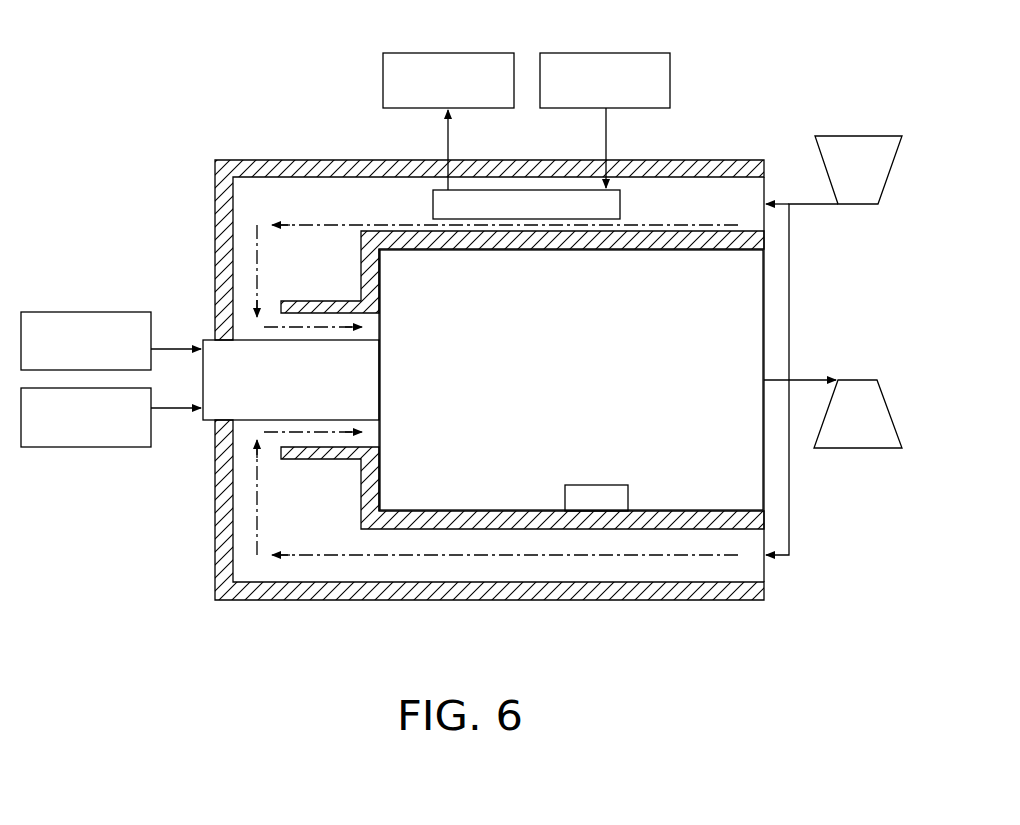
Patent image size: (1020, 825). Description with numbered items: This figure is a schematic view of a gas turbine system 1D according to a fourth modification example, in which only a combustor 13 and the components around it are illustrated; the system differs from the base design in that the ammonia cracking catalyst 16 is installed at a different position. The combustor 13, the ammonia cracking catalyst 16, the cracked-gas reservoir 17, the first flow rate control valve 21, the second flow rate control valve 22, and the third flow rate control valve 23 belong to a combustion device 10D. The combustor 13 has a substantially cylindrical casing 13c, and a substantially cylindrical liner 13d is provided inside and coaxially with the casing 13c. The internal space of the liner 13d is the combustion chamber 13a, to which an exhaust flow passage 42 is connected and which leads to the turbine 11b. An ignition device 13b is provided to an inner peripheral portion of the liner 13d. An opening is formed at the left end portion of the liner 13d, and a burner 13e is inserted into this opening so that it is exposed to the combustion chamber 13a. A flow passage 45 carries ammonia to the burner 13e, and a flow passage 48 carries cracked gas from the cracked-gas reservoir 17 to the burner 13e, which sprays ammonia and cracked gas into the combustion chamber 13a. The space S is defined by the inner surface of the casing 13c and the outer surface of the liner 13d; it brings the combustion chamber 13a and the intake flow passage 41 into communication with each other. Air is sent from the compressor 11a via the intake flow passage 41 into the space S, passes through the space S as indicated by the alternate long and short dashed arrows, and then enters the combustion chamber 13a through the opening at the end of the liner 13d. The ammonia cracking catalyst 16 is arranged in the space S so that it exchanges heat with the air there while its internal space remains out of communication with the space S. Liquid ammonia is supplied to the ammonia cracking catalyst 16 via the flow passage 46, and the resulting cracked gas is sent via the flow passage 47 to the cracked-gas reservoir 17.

The gas turbine system 1D is at (92, 72).
The combustion device 10D is at (148, 150).
The compressor 11a is at (856, 134).
The turbine 11b is at (858, 450).
The combustor 13 is at (567, 600).
The combustion chamber 13a is at (662, 450).
The ignition device 13b is at (628, 500).
The casing 13c is at (493, 600).
The liner 13d is at (420, 529).
The burner 13e is at (250, 421).
The space S is at (312, 203).
The ammonia cracking catalyst 16 is at (520, 190).
The cracked-gas reservoir 17 is at (447, 52).
The first flow rate control valve 21 is at (604, 52).
The second flow rate control valve 22 is at (84, 311).
The third flow rate control valve 23 is at (85, 450).
The intake flow passage 41 is at (818, 207).
The exhaust flow passage 42 is at (815, 378).
The flow passage 45 is at (178, 415).
The flow passage 46 is at (608, 133).
The flow passage 47 is at (445, 132).
The flow passage 48 is at (176, 343).